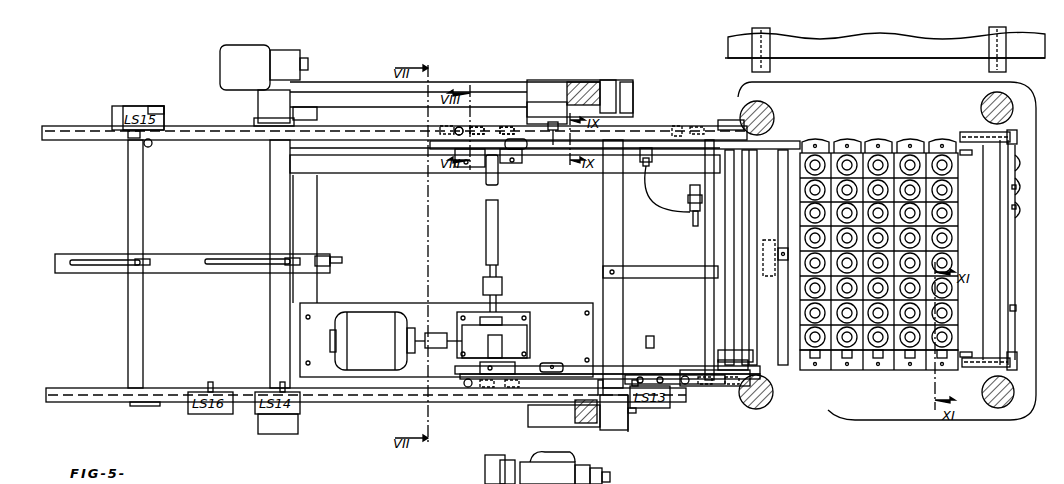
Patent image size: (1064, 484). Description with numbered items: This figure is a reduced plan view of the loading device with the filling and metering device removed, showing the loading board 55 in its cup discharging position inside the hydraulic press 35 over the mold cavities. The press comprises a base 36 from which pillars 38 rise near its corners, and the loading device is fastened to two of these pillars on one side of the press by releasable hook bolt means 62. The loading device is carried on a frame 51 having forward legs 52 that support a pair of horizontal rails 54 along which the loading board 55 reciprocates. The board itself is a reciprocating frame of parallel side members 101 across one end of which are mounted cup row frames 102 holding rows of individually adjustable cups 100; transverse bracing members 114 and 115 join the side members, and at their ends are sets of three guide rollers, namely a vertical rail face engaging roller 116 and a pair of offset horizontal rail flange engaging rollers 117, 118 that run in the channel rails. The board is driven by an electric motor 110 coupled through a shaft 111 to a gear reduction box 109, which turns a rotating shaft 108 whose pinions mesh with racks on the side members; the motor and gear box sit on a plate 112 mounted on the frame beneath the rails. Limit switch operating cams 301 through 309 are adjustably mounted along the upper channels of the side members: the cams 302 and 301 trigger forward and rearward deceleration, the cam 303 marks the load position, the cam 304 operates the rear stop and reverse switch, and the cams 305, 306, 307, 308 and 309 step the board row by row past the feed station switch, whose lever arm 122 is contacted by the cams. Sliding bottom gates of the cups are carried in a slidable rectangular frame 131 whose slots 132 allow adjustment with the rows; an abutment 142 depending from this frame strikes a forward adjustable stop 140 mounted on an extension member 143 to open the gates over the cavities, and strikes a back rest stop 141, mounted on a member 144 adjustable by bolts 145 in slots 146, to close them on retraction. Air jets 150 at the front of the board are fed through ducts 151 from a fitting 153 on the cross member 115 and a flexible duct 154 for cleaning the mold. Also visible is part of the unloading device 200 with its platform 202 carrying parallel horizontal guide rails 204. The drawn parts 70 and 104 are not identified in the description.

The hydraulic plastic press 35 is at (1025, 322).
The base 36 is at (842, 416).
The pillars 38 is at (752, 102).
The frame 51 is at (645, 432).
The forward legs 52 is at (603, 76).
The horizontal rails 54 is at (86, 120).
The loading board 55 is at (972, 103).
The releasable hook bolt means 62 is at (774, 112).
The drive unit 70 is at (583, 457).
The cups 100 is at (938, 238).
The parallel side members 101 is at (652, 150).
The cup row frames 102 is at (925, 368).
The cross bar 104 is at (978, 370).
The rotating shaft 108 is at (500, 290).
The gear reduction box 109 is at (512, 312).
The electric motor 110 is at (380, 290).
The shaft 111 is at (450, 330).
The plate 112 is at (405, 315).
The transverse bracing member 114 is at (500, 233).
The transverse bracing member 115 is at (705, 236).
The vertical rail face engaging roller 116 is at (455, 130).
The horizontal rail flange engaging roller 117 is at (478, 127).
The horizontal rail flange engaging roller 118 is at (508, 127).
The lever arm 122 is at (556, 146).
The slidable rectangular frame 131 is at (992, 276).
The slots 132 is at (966, 157).
The adjustable stop 140 is at (788, 250).
The back rest adjustable stop 141 is at (334, 256).
The abutment 142 is at (772, 235).
The extension member 143 is at (645, 270).
The member 144 is at (165, 266).
The bolts 145 is at (140, 258).
The slots 146 is at (104, 236).
The air jets 150 is at (1022, 187).
The ducts 151 is at (1018, 246).
The fitting 153 is at (692, 208).
The flexible duct 154 is at (665, 205).
The unloading device 200 is at (846, 56).
The platform 202 is at (913, 51).
The parallel horizontal guide rails 204 is at (766, 52).
The limit switch operating cam 301 is at (500, 428).
The limit switch operating cam 302 is at (690, 356).
The limit switch operating cam 303 is at (556, 363).
The limit switch operating cam 304 is at (815, 140).
The limit switch operating cam 305 is at (943, 140).
The limit switch operating cam 306 is at (920, 127).
The limit switch operating cam 307 is at (879, 140).
The limit switch operating cam 308 is at (848, 140).
The limit switch operating cam 309 is at (516, 138).